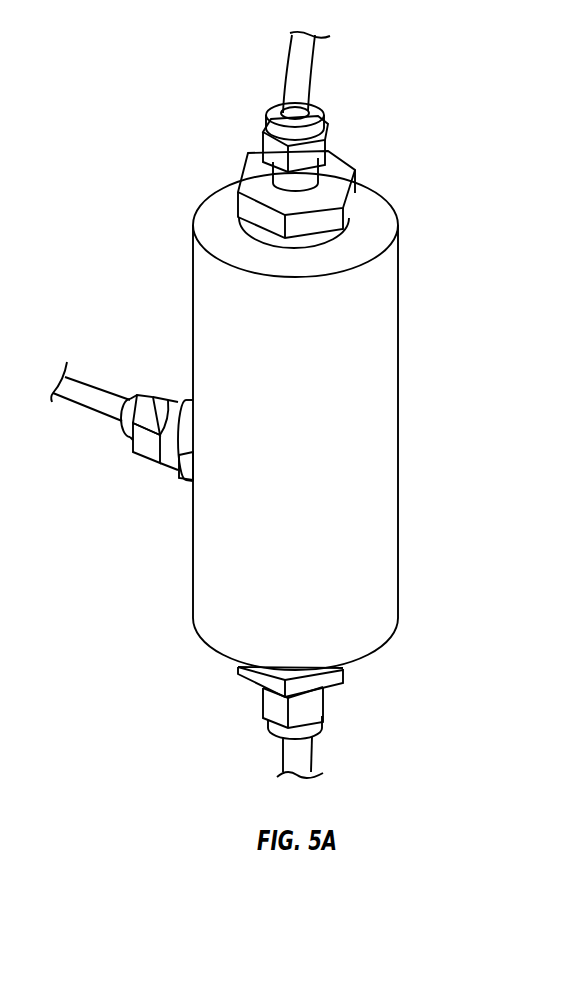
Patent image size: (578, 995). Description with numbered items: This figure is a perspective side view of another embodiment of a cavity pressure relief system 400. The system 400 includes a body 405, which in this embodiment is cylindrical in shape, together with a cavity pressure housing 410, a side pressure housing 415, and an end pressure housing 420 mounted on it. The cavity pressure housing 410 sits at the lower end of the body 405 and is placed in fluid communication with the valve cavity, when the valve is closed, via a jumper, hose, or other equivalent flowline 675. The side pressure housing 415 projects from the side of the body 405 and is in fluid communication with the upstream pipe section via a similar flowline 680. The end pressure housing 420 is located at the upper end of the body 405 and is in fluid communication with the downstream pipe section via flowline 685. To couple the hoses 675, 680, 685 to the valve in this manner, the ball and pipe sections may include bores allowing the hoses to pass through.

The cavity pressure relief system 400 is at (455, 252).
The body 405 is at (313, 441).
The cavity pressure housing 410 is at (328, 698).
The side pressure housing 415 is at (153, 467).
The end pressure housing 420 is at (343, 166).
The flowline 675 is at (305, 761).
The flowline 680 is at (93, 413).
The flowline 685 is at (307, 71).